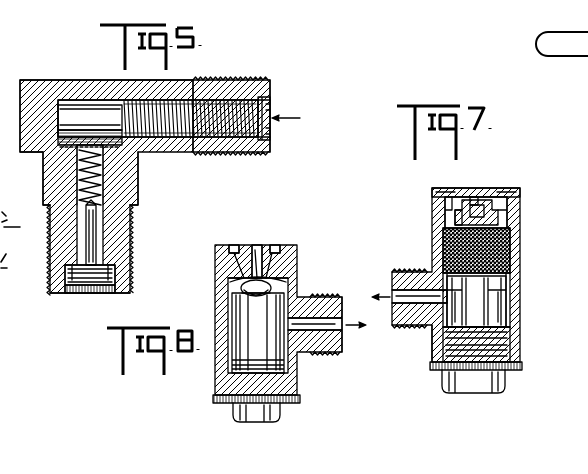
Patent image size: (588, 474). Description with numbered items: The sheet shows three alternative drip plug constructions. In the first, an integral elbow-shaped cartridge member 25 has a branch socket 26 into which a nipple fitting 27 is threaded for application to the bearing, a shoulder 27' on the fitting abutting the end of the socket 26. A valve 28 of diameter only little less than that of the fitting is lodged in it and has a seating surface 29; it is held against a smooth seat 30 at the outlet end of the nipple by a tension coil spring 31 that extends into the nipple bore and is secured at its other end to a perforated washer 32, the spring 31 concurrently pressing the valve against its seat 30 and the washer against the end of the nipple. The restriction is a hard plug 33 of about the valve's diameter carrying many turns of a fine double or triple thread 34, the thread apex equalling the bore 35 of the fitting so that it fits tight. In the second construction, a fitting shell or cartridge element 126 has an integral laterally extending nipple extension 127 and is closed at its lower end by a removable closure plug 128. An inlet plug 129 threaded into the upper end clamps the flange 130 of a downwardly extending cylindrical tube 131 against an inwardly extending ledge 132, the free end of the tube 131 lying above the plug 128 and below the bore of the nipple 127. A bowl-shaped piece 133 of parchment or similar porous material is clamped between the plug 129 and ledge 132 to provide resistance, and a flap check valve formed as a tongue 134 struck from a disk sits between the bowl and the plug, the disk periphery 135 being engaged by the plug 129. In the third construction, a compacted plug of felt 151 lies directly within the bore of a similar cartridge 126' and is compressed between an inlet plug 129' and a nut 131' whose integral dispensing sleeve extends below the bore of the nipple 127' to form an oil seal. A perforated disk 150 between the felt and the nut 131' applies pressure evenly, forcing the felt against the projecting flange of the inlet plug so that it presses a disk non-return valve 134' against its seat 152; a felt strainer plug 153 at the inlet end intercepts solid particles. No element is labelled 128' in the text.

In FIG. 5, the cartridge member 25 is at (90, 80).
In FIG. 5, the branch socket 26 is at (138, 184).
In FIG. 5, the nipple fitting 27 is at (108, 250).
In FIG. 5, the shoulder 27' is at (109, 181).
In FIG. 5, the valve 28 is at (88, 342).
In FIG. 5, the seating surface 29 is at (118, 268).
In FIG. 5, the smooth seat 30 is at (112, 245).
In FIG. 5, the tension coil spring 31 is at (82, 190).
In FIG. 5, the perforated washer 32 is at (50, 162).
In FIG. 5, the plug 33 is at (258, 97).
In FIG. 5, the thread 34 is at (243, 137).
In FIG. 5, the bore 35 is at (182, 137).
In FIG. 6, the cartridge element 126 is at (257, 320).
In FIG. 6, the nipple extension 127 is at (331, 332).
In FIG. 6, the closure plug 128 is at (271, 408).
In FIG. 6, the inlet plug 129 is at (292, 246).
In FIG. 6, the flange 130 is at (282, 290).
In FIG. 6, the cylindrical tube 131 is at (285, 336).
In FIG. 6, the ledge 132 is at (242, 288).
In FIG. 6, the bowl-shaped piece 133 is at (257, 297).
In FIG. 6, the tongue 134 is at (265, 246).
In FIG. 6, the periphery 135 is at (233, 245).
In FIG. 7, the cartridge 126' is at (482, 275).
In FIG. 7, the nipple 127' is at (409, 282).
In FIG. 7, the nut 128' is at (476, 377).
In FIG. 7, the inlet plug 129' is at (497, 180).
In FIG. 7, the nut 131' is at (454, 341).
In FIG. 7, the disk non-return valve 134' is at (425, 212).
In FIG. 7, the perforated disk 150 is at (513, 293).
In FIG. 7, the plug of felt 151 is at (510, 250).
In FIG. 7, the seat 152 is at (477, 190).
In FIG. 7, the strainer plug 153 is at (470, 192).